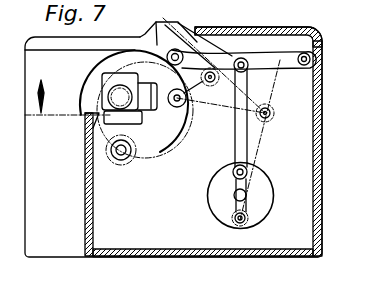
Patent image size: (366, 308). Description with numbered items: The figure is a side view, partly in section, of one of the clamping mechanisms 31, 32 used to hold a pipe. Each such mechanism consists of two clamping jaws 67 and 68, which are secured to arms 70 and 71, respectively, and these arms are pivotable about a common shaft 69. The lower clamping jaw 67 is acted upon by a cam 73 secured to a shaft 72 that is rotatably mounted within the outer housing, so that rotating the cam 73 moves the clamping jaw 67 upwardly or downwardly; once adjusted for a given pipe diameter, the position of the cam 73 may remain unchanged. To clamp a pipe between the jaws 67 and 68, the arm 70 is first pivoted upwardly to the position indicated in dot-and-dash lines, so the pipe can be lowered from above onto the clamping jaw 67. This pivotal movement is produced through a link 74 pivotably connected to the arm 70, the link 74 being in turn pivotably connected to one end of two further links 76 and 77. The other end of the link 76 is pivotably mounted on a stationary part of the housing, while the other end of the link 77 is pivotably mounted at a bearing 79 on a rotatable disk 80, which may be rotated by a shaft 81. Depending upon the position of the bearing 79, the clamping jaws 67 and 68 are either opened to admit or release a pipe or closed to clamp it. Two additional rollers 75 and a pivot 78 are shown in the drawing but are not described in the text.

The clamping mechanism 31 is at (211, 238).
The clamping mechanism 32 is at (211, 238).
The clamping jaw 67 is at (99, 114).
The clamping jaw 68 is at (113, 80).
The common shaft 69 is at (188, 104).
The arm 70 is at (140, 36).
The arm 71 is at (163, 140).
The shaft 72 is at (121, 150).
The cam 73 is at (129, 156).
The link 74 is at (212, 62).
The roller 75 is at (242, 58).
The link 76 is at (268, 51).
The link 77 is at (238, 136).
The pivot pin 78 is at (303, 53).
The bearing 79 is at (248, 171).
The rotatable disk 80 is at (262, 212).
The shaft 81 is at (238, 197).